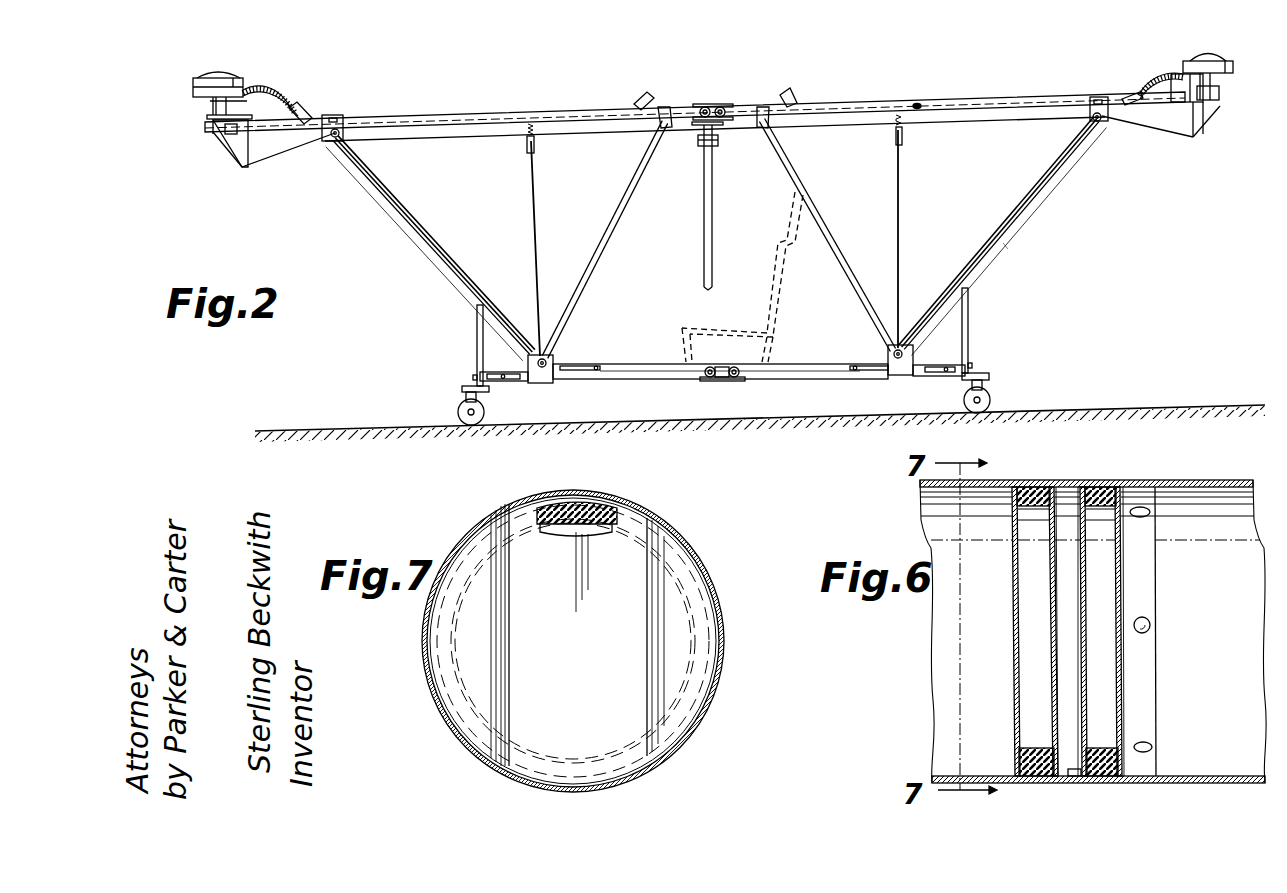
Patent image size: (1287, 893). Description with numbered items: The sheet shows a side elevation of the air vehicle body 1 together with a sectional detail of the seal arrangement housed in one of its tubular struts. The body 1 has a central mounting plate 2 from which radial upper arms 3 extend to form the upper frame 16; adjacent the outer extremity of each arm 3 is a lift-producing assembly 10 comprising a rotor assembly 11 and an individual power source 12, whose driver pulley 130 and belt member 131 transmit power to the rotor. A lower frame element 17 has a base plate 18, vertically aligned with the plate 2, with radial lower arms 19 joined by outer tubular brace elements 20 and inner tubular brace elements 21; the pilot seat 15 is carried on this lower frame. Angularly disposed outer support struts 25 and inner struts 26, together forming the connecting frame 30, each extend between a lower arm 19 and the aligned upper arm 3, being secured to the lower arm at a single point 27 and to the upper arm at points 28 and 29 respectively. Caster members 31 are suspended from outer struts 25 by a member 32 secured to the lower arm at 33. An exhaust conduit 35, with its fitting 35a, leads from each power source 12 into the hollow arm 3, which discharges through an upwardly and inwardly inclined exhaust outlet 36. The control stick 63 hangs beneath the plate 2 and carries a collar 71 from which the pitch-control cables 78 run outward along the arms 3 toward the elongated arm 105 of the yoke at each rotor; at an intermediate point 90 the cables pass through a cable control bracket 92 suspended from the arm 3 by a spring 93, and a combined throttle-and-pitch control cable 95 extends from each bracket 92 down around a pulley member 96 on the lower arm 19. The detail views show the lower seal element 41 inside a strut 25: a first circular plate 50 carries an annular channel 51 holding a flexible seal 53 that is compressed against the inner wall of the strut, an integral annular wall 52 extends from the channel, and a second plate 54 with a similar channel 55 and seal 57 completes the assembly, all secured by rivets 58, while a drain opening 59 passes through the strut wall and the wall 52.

In FIG. 2, the air vehicle body 1 is at (723, 100).
In FIG. 2, the central mounting plate 2 is at (706, 104).
In FIG. 2, the upper arm 3 is at (409, 115).
In FIG. 2, the lift-producing assembly 10 is at (198, 121).
In FIG. 2, the rotor assembly 11 is at (218, 76).
In FIG. 2, the power source 12 is at (1187, 104).
In FIG. 2, the pilot seat 15 is at (685, 326).
In FIG. 2, the upper frame 16 is at (929, 98).
In FIG. 2, the lower frame element 17 is at (610, 382).
In FIG. 2, the base plate 18 is at (722, 383).
In FIG. 2, the lower arm 19 is at (661, 381).
In FIG. 2, the outer tubular brace element 20 is at (503, 382).
In FIG. 2, the inner tubular brace element 21 is at (578, 373).
In FIG. 2, the outer support strut 25 is at (434, 242).
In FIG. 7, the outer support strut 25 is at (698, 549).
In FIG. 6, the outer support strut 25 is at (1240, 480).
In FIG. 2, the inner angularly disposed strut 26 is at (615, 218).
In FIG. 2, the securing point 27 is at (541, 384).
In FIG. 2, the securing point 28 is at (335, 115).
In FIG. 2, the securing point 29 is at (666, 107).
In FIG. 2, the connecting frame 30 is at (1003, 250).
In FIG. 2, the caster member 31 is at (458, 411).
In FIG. 2, the suspension member 32 is at (476, 341).
In FIG. 2, the securing point 33 is at (473, 378).
In FIG. 2, the exhaust conduit 35 is at (279, 88).
In FIG. 2, the hose fitting 35a is at (305, 106).
In FIG. 2, the exhaust outlet 36 is at (641, 93).
In FIG. 7, the lower seal element 41 is at (663, 537).
In FIG. 6, the lower seal element 41 is at (1008, 658).
In FIG. 7, the first circular plate 50 is at (470, 656).
In FIG. 6, the first circular plate 50 is at (1013, 600).
In FIG. 7, the annular channel 51 is at (557, 757).
In FIG. 6, the annular channel 51 is at (1038, 747).
In FIG. 7, the annular wall 52 is at (608, 776).
In FIG. 6, the annular wall 52 is at (1067, 774).
In FIG. 7, the flexible seal 53 is at (575, 500).
In FIG. 6, the flexible seal 53 is at (1037, 490).
In FIG. 6, the second plate 54 is at (1086, 606).
In FIG. 6, the channel 55 is at (1102, 747).
In FIG. 6, the seal 57 is at (1104, 490).
In FIG. 6, the rivet 58 is at (1151, 626).
In FIG. 6, the drain opening 59 is at (1075, 777).
In FIG. 2, the control stick 63 is at (703, 242).
In FIG. 2, the collar 71 is at (719, 143).
In FIG. 2, the pitch-control cable 78 is at (300, 152).
In FIG. 2, the intermediate point 90 is at (537, 146).
In FIG. 2, the cable control bracket 92 is at (526, 146).
In FIG. 2, the spring 93 is at (531, 126).
In FIG. 2, the combined throttle-and-pitch control cable 95 is at (533, 236).
In FIG. 2, the pulley member 96 is at (548, 362).
In FIG. 2, the elongated arm 105 is at (236, 152).
In FIG. 2, the driver pulley 130 is at (706, 126).
In FIG. 2, the belt member 131 is at (193, 94).